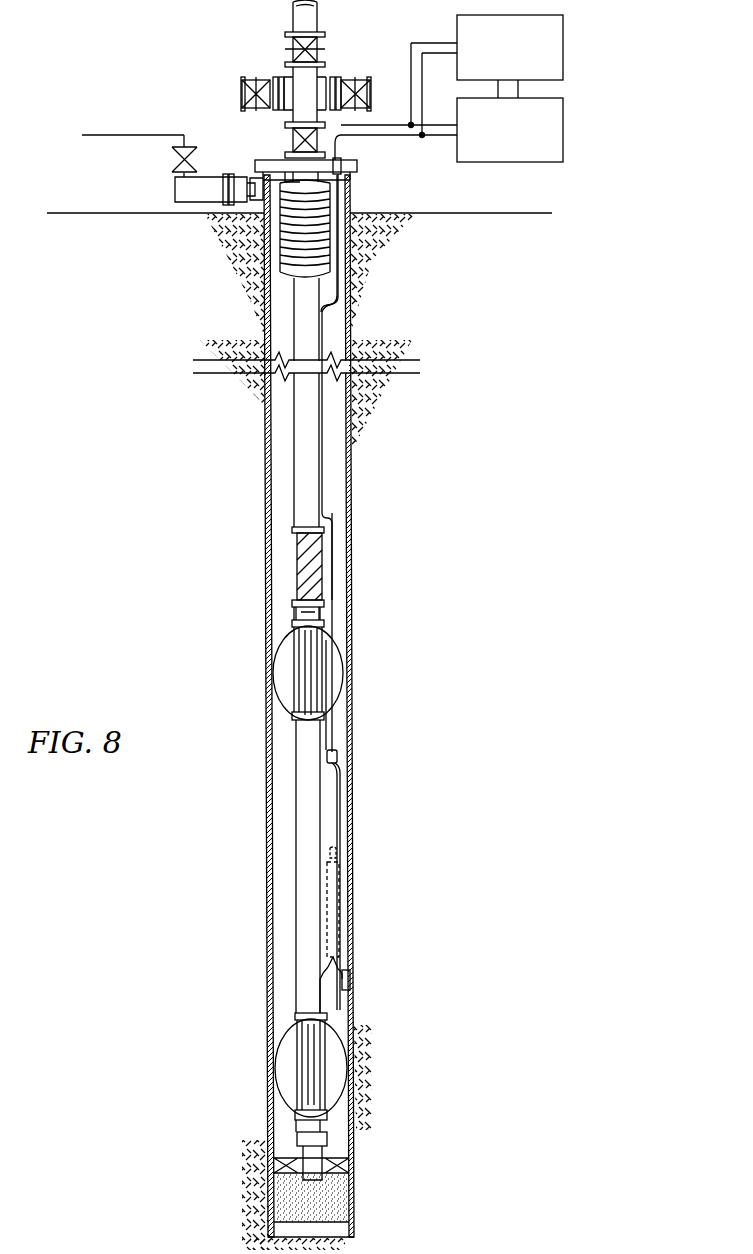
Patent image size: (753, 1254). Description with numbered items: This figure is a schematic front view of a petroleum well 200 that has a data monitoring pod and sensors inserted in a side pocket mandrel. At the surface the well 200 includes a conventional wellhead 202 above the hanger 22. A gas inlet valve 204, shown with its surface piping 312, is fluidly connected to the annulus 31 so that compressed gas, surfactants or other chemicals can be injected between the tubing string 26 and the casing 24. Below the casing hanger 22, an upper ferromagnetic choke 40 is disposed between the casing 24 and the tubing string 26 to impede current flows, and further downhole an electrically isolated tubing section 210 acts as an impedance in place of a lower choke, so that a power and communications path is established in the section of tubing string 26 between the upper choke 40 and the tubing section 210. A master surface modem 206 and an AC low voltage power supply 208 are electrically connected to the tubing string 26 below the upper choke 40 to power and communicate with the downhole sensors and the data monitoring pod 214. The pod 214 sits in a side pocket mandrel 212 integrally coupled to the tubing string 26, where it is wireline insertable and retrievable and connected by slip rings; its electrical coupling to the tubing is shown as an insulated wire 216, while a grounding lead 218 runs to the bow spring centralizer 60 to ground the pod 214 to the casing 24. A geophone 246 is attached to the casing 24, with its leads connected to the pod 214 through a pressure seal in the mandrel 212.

The hanger 22 is at (273, 165).
The casing 24 is at (265, 310).
The tubing string 26 is at (293, 462).
The annulus 31 is at (330, 478).
The upper ferromagnetic choke 40 is at (283, 260).
The bow spring centralizer 60 is at (282, 695).
The well 200 is at (434, 534).
The wellhead 202 is at (290, 84).
The gas inlet valve 204 is at (175, 190).
The master surface modem 206 is at (565, 48).
The AC low voltage power supply 208 is at (565, 130).
The electrically isolated tubing section 210 is at (299, 565).
The side pocket mandrel 212 is at (337, 802).
The data monitoring pod 214 is at (350, 913).
The insulated wire 216 is at (334, 590).
The grounding lead 218 is at (335, 718).
The geophone 246 is at (350, 986).
The flow line 312 is at (78, 212).